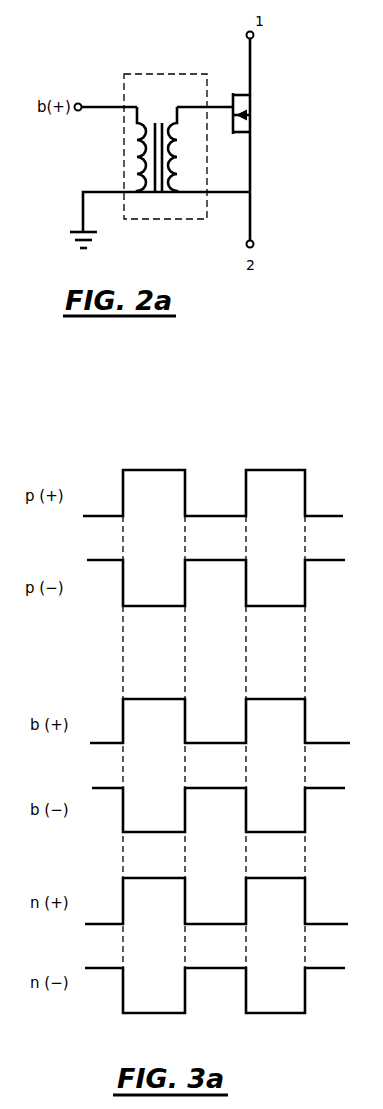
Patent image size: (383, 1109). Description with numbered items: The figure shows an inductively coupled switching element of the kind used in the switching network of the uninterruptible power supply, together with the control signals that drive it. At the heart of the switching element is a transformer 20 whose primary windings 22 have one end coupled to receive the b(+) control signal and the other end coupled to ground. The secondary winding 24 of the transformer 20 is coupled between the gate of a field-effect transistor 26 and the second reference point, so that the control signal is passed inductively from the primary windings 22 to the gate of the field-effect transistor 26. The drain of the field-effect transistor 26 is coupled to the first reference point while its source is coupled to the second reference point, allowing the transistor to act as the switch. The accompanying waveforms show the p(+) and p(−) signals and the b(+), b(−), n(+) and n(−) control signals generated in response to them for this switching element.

The transformer 20 is at (165, 130).
The primary windings 22 is at (152, 88).
The secondary winding 24 is at (178, 107).
The field-effect transistor 26 is at (233, 93).